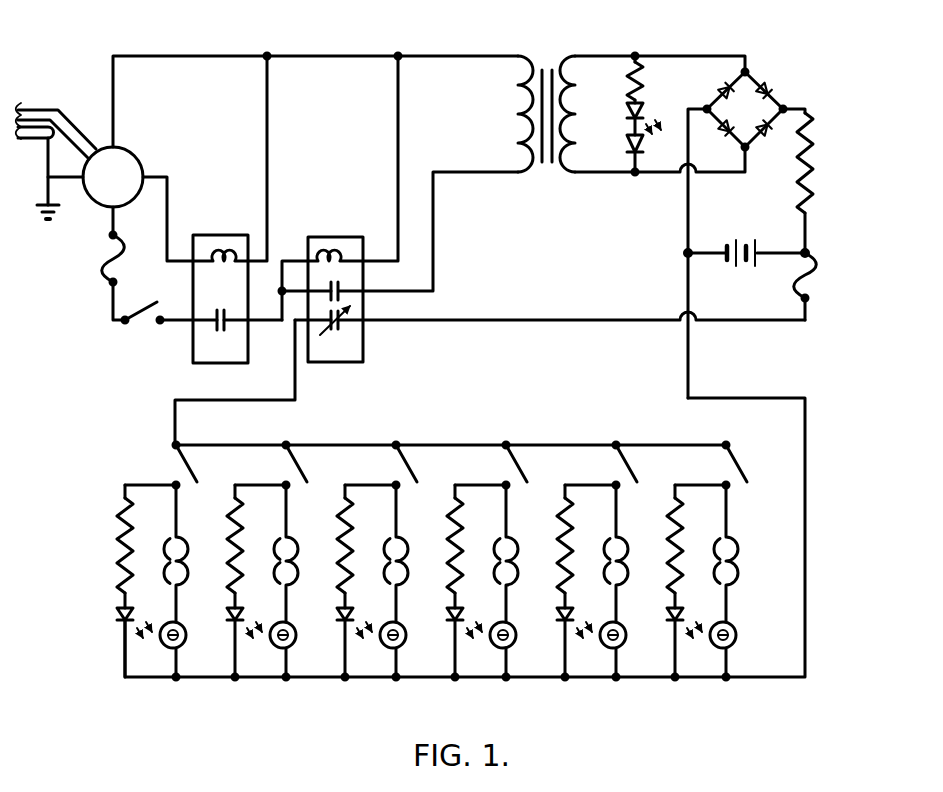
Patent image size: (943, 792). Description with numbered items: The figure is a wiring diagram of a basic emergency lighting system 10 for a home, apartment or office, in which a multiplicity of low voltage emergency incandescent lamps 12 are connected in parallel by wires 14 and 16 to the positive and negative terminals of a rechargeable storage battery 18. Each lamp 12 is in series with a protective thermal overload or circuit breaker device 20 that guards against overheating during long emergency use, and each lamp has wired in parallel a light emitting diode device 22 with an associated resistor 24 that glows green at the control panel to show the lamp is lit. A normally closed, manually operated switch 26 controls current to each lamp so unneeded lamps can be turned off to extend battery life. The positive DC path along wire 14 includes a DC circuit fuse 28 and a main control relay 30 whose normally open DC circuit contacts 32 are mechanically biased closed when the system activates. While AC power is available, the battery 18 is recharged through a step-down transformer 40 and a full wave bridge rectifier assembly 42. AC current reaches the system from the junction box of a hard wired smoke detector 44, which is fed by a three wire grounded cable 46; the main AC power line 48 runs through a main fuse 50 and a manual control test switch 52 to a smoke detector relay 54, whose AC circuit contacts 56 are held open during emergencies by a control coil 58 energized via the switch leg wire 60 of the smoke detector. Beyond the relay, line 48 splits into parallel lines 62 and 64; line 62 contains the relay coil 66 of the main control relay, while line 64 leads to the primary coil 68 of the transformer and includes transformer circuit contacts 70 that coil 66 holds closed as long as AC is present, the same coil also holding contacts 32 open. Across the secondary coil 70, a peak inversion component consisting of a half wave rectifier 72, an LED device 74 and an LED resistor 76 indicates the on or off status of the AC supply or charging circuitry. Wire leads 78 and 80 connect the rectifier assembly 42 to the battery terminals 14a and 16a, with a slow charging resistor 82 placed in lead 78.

The emergency lighting system 10 is at (491, 348).
The emergency incandescent lamp 12 is at (184, 645).
The wire 14 is at (555, 318).
The battery terminal 14a is at (807, 252).
The wire 16 is at (740, 397).
The battery terminal 16a is at (686, 252).
The rechargeable storage battery 18 is at (751, 276).
The protective thermal overload or circuit breaker device 20 is at (183, 541).
The light emitting diode device 22 is at (117, 616).
The resistor 24 is at (119, 543).
The manually operated switch 26 is at (190, 467).
The DC circuit fuse 28 is at (812, 280).
The main control relay 30 is at (330, 236).
The DC circuit contacts 32 is at (346, 326).
The step-down transformer 40 is at (545, 68).
The full wave bridge rectifier assembly 42 is at (763, 82).
The smoke detector 44 is at (126, 161).
The three wire grounded cable 46 is at (36, 111).
The main AC power line 48 is at (111, 302).
The main fuse 50 is at (102, 262).
The manual control test switch 52 is at (145, 323).
The smoke detector relay 54 is at (236, 235).
The AC circuit contacts 56 is at (218, 329).
The control coil 58 is at (216, 266).
The switch leg wire 60 is at (168, 187).
The line 62 is at (400, 122).
The line 64 is at (114, 110).
The relay coil 66 is at (337, 257).
The primary coil 68 is at (520, 98).
The transformer circuit contacts 70 is at (346, 291).
The half wave rectifier 72 is at (628, 152).
The LED device 74 is at (641, 115).
The LED resistor 76 is at (641, 80).
The wire lead 78 is at (808, 115).
The wire lead 80 is at (687, 210).
The slow charging resistor 82 is at (812, 165).